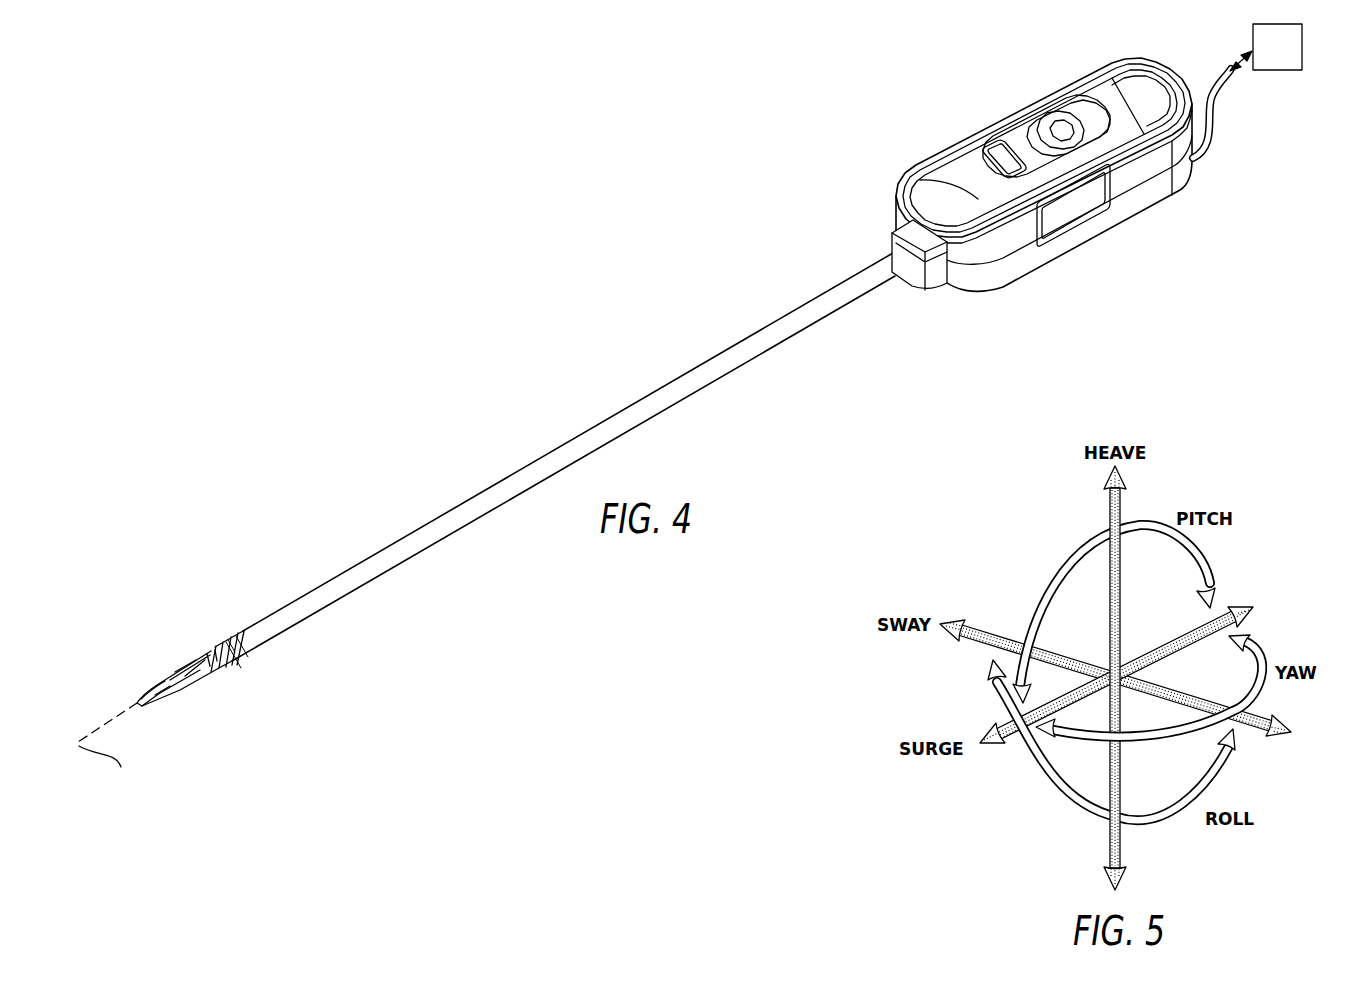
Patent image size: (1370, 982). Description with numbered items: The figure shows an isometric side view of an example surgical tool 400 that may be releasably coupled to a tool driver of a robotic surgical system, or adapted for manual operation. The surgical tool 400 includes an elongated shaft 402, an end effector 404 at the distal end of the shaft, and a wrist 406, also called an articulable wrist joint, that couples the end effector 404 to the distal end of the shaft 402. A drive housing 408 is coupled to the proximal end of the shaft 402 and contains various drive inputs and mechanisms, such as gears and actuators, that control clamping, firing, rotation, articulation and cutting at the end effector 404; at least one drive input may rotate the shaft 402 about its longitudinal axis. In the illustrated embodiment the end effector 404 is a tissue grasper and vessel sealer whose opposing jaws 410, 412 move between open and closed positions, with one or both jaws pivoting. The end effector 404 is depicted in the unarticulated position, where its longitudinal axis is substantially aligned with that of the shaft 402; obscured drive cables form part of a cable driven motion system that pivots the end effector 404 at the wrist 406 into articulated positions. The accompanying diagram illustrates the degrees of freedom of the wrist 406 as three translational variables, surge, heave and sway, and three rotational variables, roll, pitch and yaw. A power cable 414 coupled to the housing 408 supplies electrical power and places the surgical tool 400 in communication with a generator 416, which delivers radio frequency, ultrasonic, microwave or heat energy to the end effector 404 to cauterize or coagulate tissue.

The surgical tool 400 is at (631, 201).
The elongated shaft 402 is at (581, 433).
The end effector 404 is at (163, 646).
The wrist 406 is at (233, 666).
The drive housing 408 is at (948, 147).
The jaw 410 is at (143, 688).
The jaw 412 is at (150, 701).
The power cable 414 is at (1214, 139).
The generator 416 is at (1294, 61).